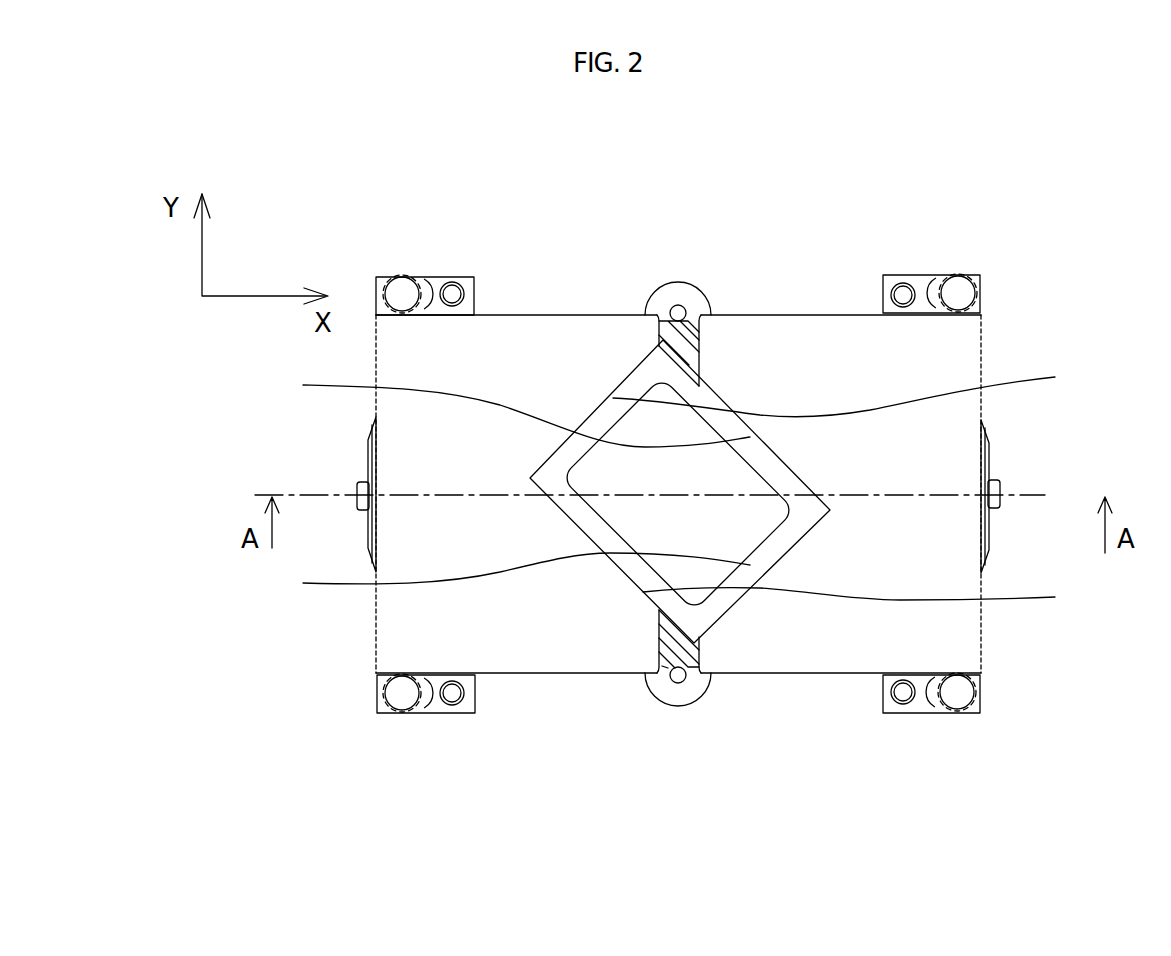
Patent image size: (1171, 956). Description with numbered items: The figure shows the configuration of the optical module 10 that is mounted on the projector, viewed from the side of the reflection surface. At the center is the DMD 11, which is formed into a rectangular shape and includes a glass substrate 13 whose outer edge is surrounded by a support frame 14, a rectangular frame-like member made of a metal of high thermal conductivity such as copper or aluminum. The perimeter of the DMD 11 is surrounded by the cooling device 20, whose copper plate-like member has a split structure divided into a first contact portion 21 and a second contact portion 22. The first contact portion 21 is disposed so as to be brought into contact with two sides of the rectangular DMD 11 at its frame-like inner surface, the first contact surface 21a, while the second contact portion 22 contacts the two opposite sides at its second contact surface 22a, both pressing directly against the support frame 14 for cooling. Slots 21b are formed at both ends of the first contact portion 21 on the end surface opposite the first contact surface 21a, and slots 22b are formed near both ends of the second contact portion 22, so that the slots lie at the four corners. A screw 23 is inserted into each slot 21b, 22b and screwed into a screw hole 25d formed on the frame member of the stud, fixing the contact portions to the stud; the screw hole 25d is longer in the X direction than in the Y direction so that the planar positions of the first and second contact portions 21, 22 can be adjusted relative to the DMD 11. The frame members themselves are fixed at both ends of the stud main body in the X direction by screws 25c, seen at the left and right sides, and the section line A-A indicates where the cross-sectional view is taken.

The optical module 10 is at (861, 216).
The DMD 11 is at (631, 357).
The glass substrate 13 is at (730, 481).
The support frame 14 is at (711, 400).
The cooling device 20 is at (645, 268).
The first contact portion 21 is at (542, 301).
The first contact surface 21a is at (860, 486).
The slot 21b is at (376, 277).
The second contact portion 22 is at (794, 300).
The second contact surface 22a is at (502, 483).
The slot 22b is at (981, 276).
The screw 23 is at (403, 293).
The screw 25c is at (357, 490).
The screw hole 25d is at (417, 281).